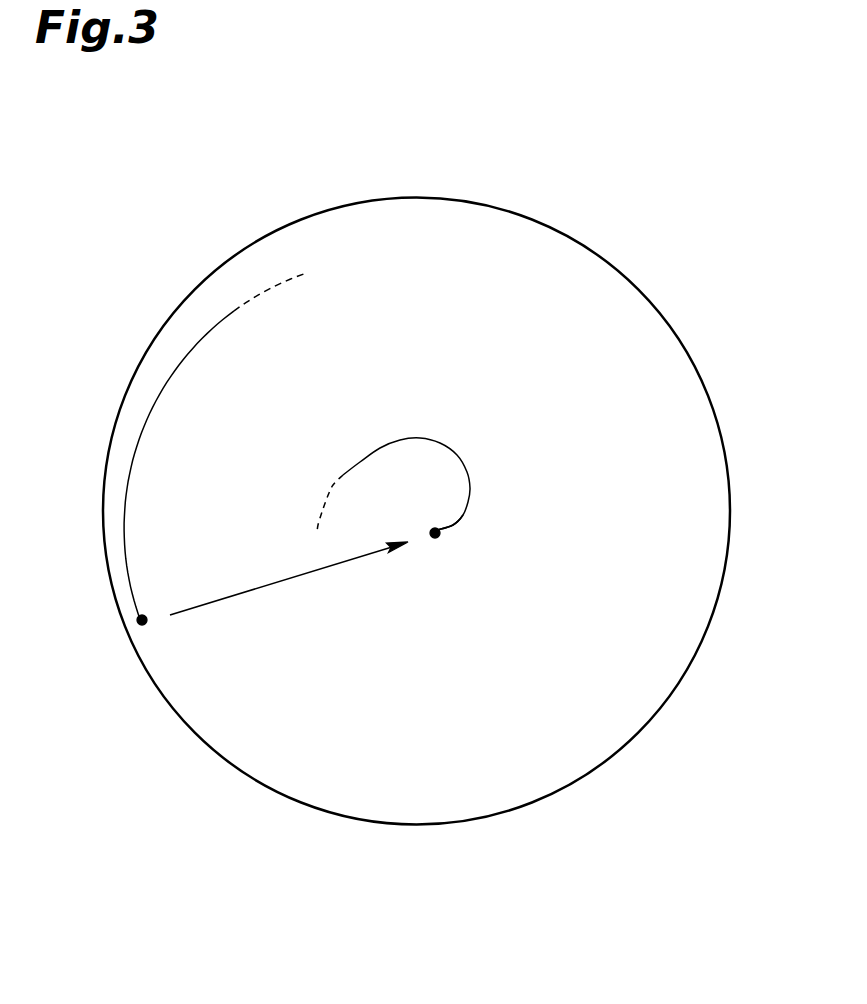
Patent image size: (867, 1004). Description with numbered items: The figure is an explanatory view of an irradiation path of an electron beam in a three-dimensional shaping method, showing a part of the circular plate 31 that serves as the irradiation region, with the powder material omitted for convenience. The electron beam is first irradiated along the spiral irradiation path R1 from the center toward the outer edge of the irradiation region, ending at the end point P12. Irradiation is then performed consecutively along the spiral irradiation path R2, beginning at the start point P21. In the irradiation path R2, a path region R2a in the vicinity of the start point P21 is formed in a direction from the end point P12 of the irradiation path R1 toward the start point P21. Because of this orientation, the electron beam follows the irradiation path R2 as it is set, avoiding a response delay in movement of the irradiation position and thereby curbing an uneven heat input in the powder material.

The circular plate 31 is at (707, 638).
The irradiation path R1 is at (147, 425).
The irradiation path R2 is at (470, 492).
The path region R2a is at (453, 525).
The start point P21 is at (437, 540).
The end point P12 is at (137, 620).